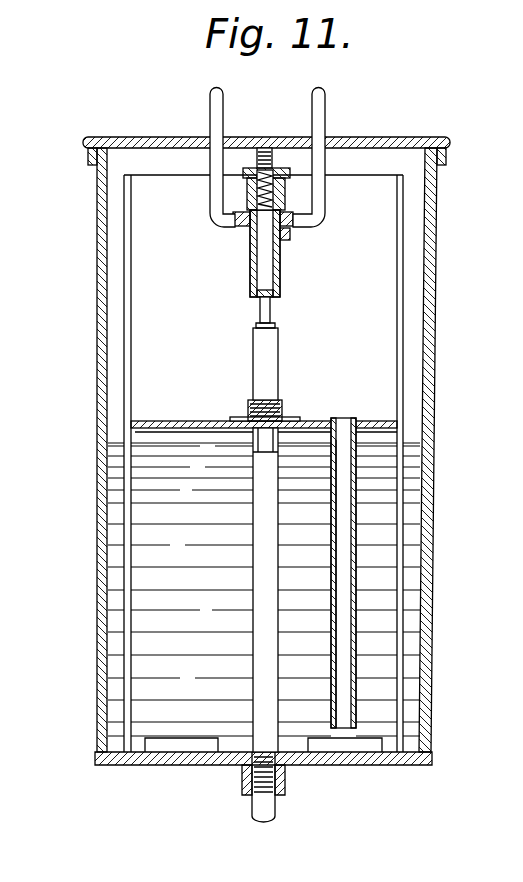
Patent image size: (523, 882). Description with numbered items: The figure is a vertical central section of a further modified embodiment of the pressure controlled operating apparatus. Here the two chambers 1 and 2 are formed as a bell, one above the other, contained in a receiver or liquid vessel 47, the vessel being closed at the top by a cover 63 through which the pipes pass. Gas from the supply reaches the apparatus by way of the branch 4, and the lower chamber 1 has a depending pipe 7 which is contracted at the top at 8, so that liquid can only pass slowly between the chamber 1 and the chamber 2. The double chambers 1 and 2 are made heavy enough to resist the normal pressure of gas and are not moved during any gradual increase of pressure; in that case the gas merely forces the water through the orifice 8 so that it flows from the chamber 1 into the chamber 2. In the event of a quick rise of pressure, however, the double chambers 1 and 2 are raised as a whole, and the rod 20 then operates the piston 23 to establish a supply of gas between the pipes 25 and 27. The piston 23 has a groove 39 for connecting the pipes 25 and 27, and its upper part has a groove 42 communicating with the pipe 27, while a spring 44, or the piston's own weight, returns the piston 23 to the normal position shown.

The lower chamber 1 is at (140, 637).
The upper chamber 2 is at (366, 319).
The branch 4 is at (266, 809).
The depending pipe 7 is at (345, 590).
The contracted opening 8 is at (344, 419).
The rod 20 is at (272, 366).
The piston 23 is at (271, 273).
The pipe 25 is at (214, 110).
The pipe 27 is at (327, 126).
The groove 39 is at (263, 248).
The groove 42 is at (272, 232).
The spring 44 is at (266, 184).
The receiver or liquid vessel 47 is at (108, 590).
The cover 63 is at (438, 181).